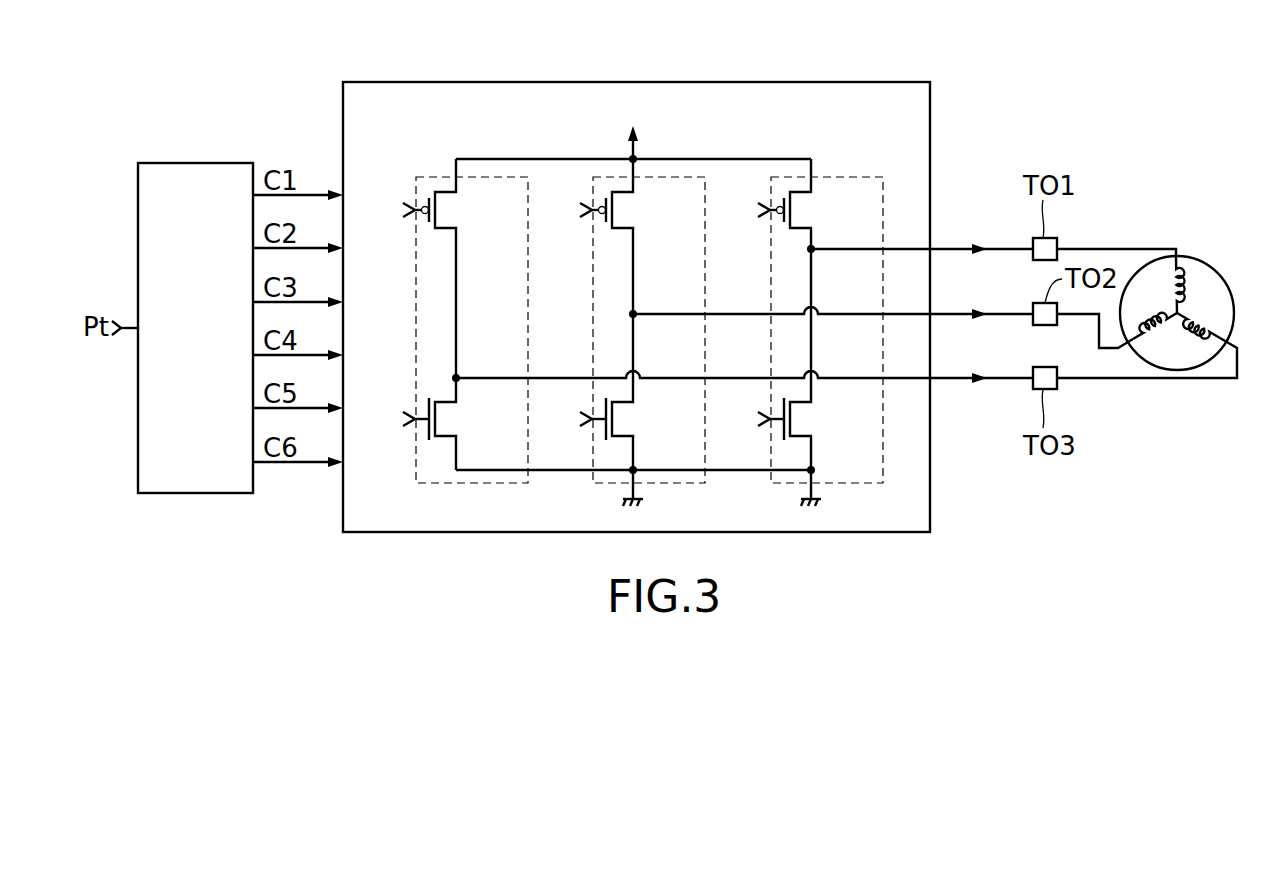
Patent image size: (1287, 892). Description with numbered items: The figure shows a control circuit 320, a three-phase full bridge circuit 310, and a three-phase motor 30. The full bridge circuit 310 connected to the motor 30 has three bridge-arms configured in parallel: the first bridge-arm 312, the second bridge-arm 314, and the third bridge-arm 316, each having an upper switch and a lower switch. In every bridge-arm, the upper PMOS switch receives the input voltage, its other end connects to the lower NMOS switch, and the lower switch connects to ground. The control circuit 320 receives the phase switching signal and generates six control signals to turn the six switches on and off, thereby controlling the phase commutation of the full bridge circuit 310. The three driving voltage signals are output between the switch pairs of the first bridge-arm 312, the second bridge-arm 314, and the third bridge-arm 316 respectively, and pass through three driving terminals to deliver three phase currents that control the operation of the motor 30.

The motor 30 is at (1210, 266).
The full bridge circuit 310 is at (788, 82).
The first bridge-arm 312 is at (437, 177).
The second bridge-arm 314 is at (686, 177).
The third bridge-arm 316 is at (832, 177).
The control circuit 320 is at (196, 163).